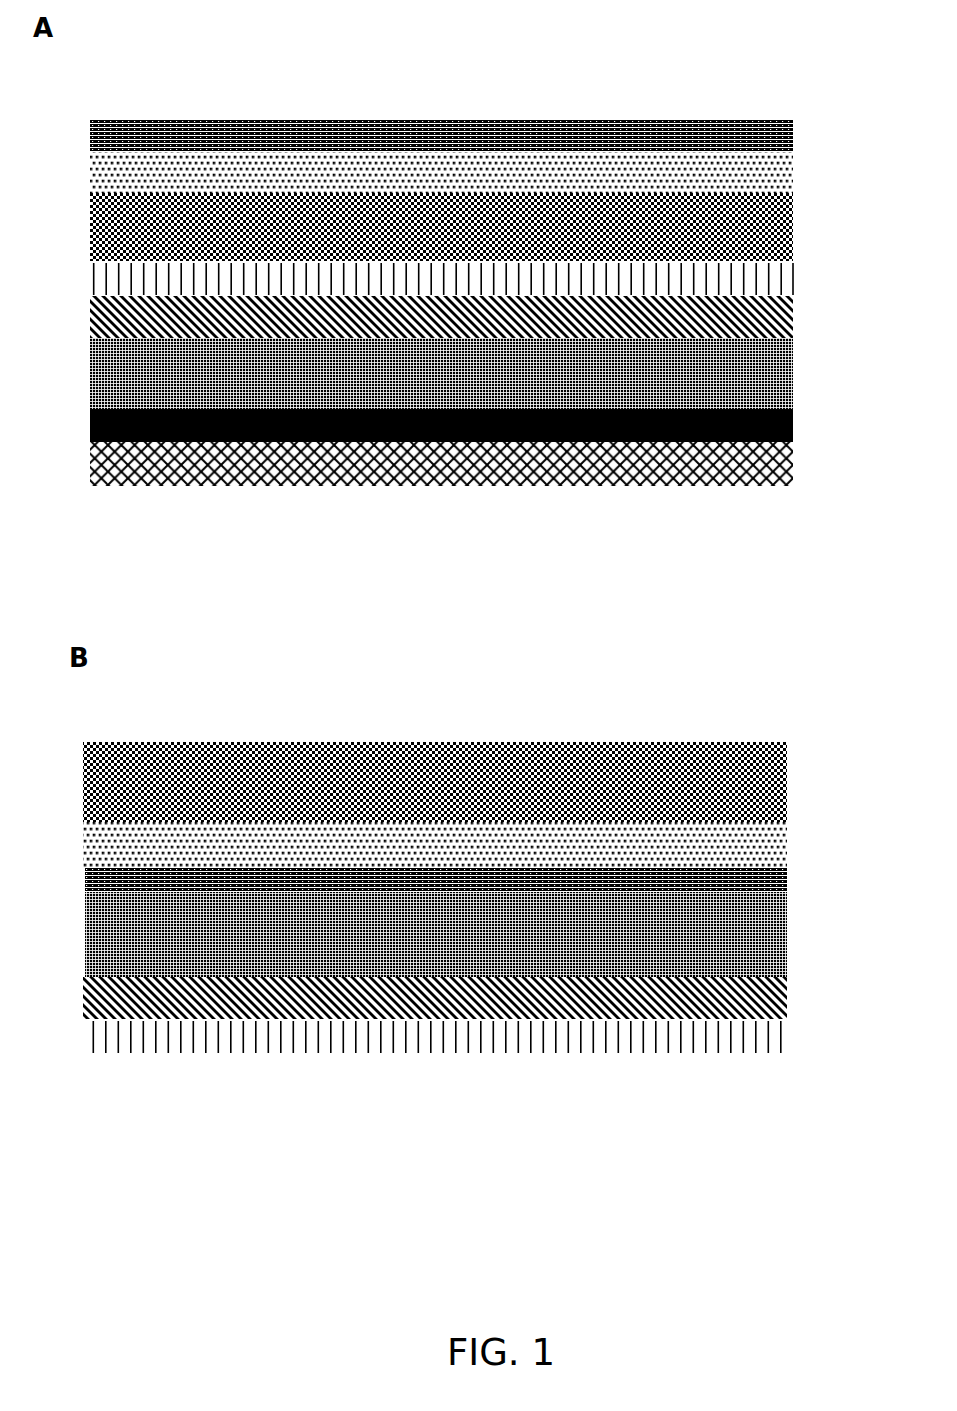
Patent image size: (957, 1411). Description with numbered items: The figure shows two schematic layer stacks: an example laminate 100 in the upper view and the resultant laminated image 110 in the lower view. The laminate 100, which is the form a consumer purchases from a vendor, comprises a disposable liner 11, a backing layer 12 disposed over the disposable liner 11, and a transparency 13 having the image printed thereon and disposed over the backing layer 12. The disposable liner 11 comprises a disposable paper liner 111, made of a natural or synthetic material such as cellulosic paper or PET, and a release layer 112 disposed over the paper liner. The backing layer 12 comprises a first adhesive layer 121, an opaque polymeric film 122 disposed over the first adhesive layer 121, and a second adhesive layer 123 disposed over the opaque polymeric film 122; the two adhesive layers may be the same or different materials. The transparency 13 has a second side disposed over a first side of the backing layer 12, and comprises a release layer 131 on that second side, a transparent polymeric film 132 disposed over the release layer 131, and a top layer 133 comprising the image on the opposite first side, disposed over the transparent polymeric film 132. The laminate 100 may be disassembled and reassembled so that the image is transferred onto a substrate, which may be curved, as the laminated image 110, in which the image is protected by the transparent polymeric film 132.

In FIG. 1A, the laminate 100 is at (131, 101).
In FIG. 1B, the laminated image 110 is at (120, 740).
In FIG. 1A, the disposable liner 11 is at (66, 411).
In FIG. 1A, the backing layer 12 is at (66, 263).
In FIG. 1A, the transparency 13 is at (66, 121).
In FIG. 1A, the disposable paper liner 111 is at (795, 468).
In FIG. 1A, the release layer 112 is at (795, 428).
In FIG. 1A, the first adhesive layer 121 is at (795, 375).
In FIG. 1B, the first adhesive layer 121 is at (789, 943).
In FIG. 1A, the opaque polymeric film 122 is at (795, 318).
In FIG. 1B, the opaque polymeric film 122 is at (789, 997).
In FIG. 1A, the second adhesive layer 123 is at (795, 283).
In FIG. 1B, the second adhesive layer 123 is at (789, 1038).
In FIG. 1A, the release layer 131 is at (795, 234).
In FIG. 1B, the release layer 131 is at (789, 792).
In FIG. 1A, the transparent polymeric film 132 is at (795, 173).
In FIG. 1B, the transparent polymeric film 132 is at (789, 845).
In FIG. 1A, the top layer 133 is at (795, 141).
In FIG. 1B, the top layer 133 is at (789, 886).